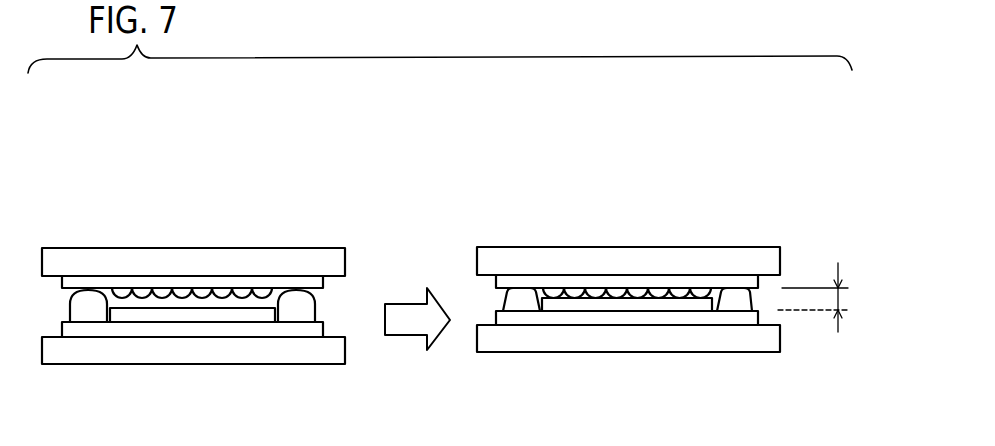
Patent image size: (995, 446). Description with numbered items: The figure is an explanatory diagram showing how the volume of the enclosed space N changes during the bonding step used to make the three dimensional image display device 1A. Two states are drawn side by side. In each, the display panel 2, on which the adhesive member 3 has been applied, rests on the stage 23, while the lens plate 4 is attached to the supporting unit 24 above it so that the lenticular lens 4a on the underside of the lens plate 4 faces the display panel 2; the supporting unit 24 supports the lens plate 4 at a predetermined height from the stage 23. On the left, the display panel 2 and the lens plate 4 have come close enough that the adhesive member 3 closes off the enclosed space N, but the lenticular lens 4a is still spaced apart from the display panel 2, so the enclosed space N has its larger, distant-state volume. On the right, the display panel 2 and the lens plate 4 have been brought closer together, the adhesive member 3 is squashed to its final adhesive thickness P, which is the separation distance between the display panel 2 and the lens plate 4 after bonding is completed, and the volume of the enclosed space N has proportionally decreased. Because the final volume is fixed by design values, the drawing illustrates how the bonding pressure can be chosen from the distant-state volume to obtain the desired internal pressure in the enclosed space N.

The three dimensional image display device 1A is at (785, 157).
The display panel 2 is at (266, 330).
The adhesive member 3 is at (90, 297).
The lens plate 4 is at (272, 283).
The lenticular lens 4a is at (248, 280).
The stage 23 is at (193, 357).
The supporting unit 24 is at (192, 253).
The enclosed space N is at (108, 297).
The final adhesive thickness P is at (823, 297).